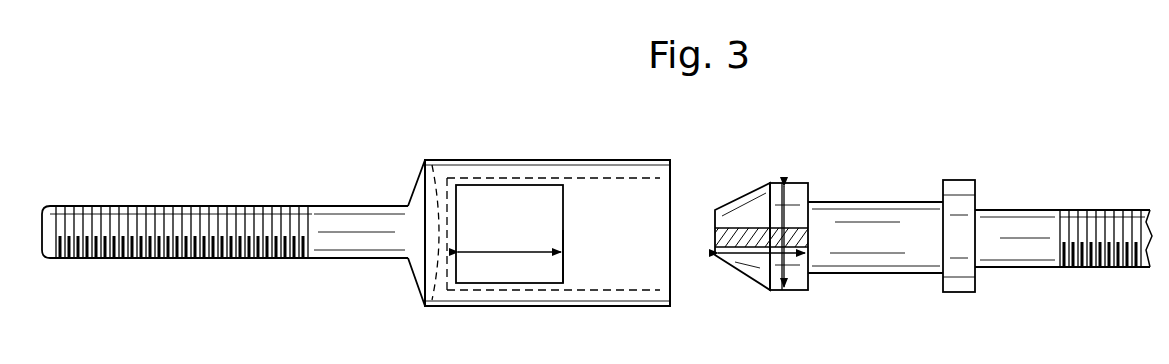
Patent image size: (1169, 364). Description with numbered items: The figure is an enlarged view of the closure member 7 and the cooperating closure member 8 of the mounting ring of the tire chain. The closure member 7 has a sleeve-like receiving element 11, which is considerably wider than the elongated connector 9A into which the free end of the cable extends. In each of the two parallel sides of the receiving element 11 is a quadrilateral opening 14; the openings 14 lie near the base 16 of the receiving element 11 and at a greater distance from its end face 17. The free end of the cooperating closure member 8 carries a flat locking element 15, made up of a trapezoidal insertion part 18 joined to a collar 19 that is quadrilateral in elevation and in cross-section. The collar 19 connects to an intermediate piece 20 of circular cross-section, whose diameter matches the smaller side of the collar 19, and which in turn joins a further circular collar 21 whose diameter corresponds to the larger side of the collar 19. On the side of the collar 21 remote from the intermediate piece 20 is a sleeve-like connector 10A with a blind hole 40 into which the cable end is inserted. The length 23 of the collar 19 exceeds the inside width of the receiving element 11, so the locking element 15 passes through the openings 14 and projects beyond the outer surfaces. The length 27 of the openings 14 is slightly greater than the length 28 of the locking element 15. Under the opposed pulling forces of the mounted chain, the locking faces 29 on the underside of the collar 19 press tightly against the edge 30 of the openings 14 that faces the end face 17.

The closure member 7 is at (512, 138).
The cooperating closure member 8 is at (1036, 178).
The elongated connector 9A is at (158, 208).
The sleeve-like connector 10A is at (1115, 270).
The receiving element 11 is at (626, 197).
The opening 14 is at (556, 200).
The locking element 15 is at (792, 197).
The base 16 is at (441, 203).
The end face 17 is at (672, 192).
The insertion part 18 is at (749, 207).
The collar 19 is at (795, 218).
The intermediate piece 20 is at (903, 213).
The collar 21 is at (963, 195).
The length of the collar 23 is at (788, 265).
The length of the openings 27 is at (497, 255).
The length of the locking element 28 is at (750, 255).
The locking faces 29 is at (810, 186).
The edge of the openings 30 is at (565, 235).
The blind hole 40 is at (1110, 218).